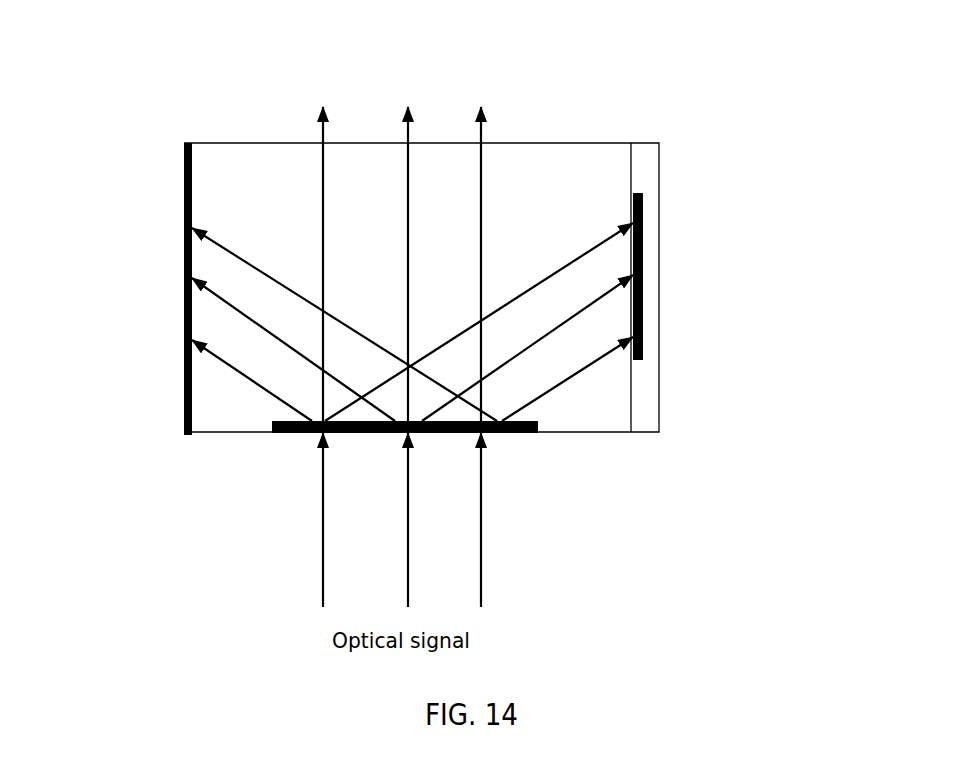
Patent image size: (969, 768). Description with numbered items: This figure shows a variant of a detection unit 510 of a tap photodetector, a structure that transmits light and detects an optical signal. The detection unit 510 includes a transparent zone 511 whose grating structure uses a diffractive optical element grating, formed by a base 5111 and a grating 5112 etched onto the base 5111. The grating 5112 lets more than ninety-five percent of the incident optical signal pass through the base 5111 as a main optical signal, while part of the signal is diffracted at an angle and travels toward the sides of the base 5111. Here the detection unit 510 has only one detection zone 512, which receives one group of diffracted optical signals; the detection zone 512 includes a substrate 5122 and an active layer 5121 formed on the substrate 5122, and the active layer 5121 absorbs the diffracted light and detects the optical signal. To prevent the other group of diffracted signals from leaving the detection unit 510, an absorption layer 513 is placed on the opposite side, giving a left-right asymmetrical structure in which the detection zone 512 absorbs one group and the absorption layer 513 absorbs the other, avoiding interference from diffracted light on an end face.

The detection unit 510 is at (104, 88).
The transparent zone 511 is at (538, 105).
The base 5111 is at (262, 197).
The grating 5112 is at (277, 434).
The detection zone 512 is at (786, 165).
The active layer 5121 is at (643, 273).
The substrate 5122 is at (640, 176).
The absorption layer 513 is at (186, 240).